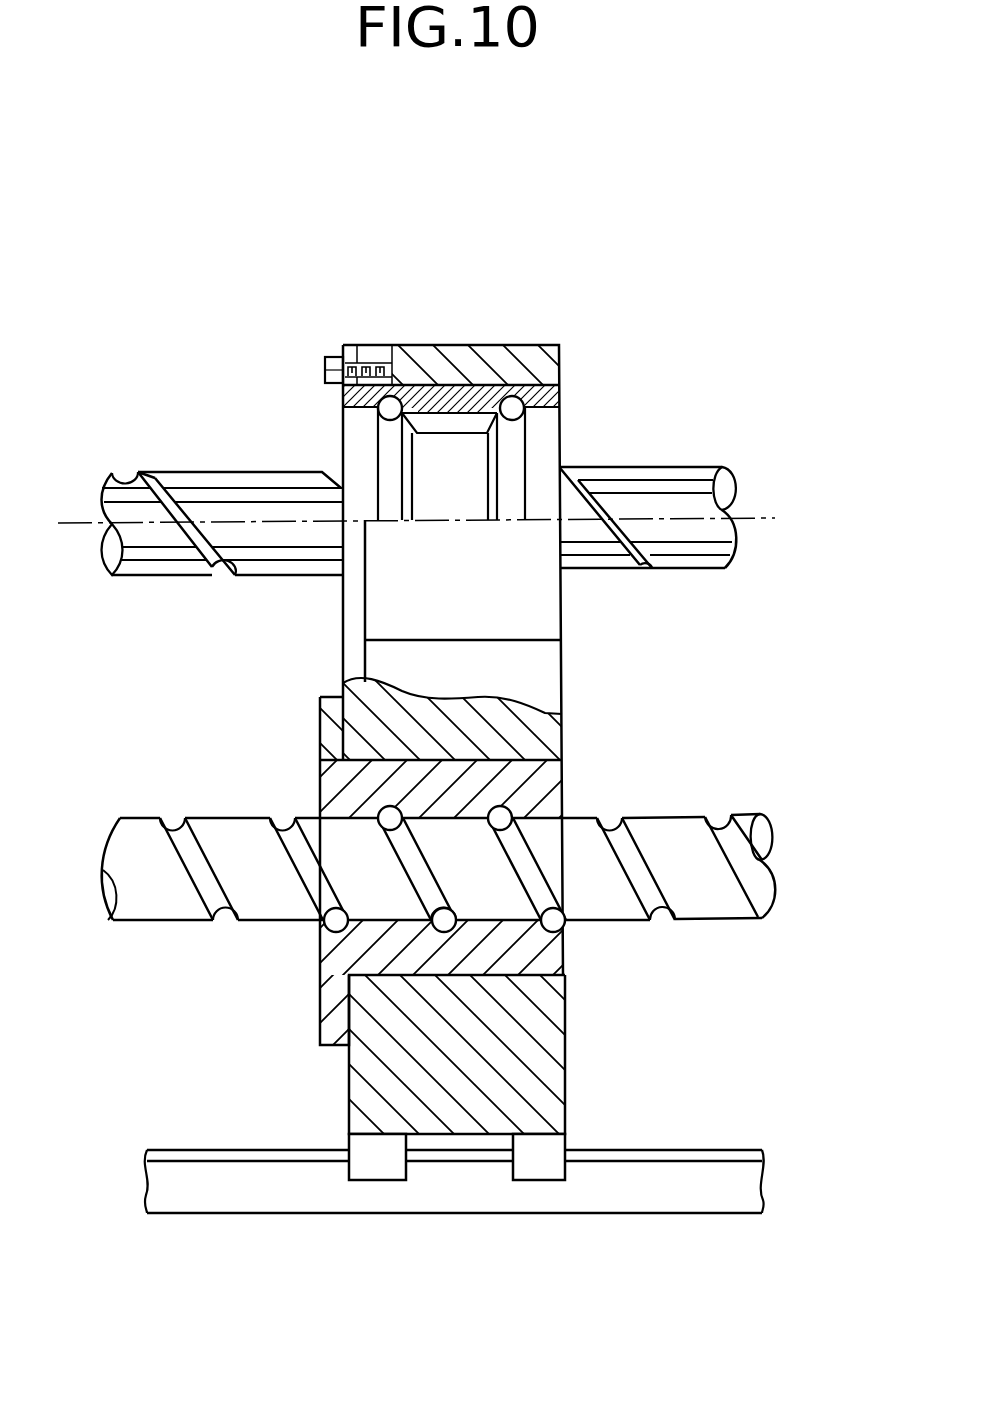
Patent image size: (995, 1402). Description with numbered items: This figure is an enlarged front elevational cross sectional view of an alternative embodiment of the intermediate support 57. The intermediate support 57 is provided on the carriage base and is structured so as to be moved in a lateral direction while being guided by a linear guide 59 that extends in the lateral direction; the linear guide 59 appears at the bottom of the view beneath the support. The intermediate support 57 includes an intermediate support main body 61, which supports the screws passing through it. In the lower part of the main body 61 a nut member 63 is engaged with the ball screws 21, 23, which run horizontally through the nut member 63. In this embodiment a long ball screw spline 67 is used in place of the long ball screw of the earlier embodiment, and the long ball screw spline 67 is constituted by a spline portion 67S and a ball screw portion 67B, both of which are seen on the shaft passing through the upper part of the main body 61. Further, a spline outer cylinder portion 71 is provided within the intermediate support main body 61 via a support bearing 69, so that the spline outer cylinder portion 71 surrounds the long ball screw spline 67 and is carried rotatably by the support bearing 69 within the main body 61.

The intermediate support 57 is at (668, 412).
The linear guide 59 is at (210, 1213).
The intermediate support main body 61 is at (547, 733).
The nut member 63 is at (337, 777).
The long ball screw spline 67 is at (232, 470).
The ball screw portion 67B is at (628, 464).
The spline portion 67S is at (695, 545).
The support bearing 69 is at (432, 397).
The spline outer cylinder portion 71 is at (457, 497).
The ball screw 21 is at (439, 912).
The ball screw 23 is at (690, 905).